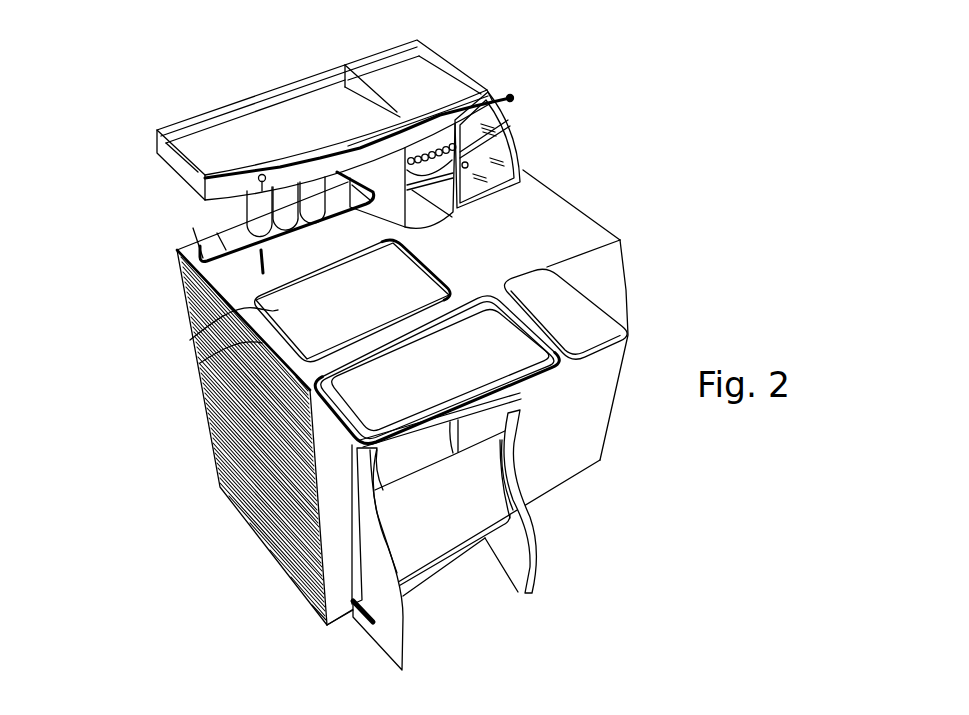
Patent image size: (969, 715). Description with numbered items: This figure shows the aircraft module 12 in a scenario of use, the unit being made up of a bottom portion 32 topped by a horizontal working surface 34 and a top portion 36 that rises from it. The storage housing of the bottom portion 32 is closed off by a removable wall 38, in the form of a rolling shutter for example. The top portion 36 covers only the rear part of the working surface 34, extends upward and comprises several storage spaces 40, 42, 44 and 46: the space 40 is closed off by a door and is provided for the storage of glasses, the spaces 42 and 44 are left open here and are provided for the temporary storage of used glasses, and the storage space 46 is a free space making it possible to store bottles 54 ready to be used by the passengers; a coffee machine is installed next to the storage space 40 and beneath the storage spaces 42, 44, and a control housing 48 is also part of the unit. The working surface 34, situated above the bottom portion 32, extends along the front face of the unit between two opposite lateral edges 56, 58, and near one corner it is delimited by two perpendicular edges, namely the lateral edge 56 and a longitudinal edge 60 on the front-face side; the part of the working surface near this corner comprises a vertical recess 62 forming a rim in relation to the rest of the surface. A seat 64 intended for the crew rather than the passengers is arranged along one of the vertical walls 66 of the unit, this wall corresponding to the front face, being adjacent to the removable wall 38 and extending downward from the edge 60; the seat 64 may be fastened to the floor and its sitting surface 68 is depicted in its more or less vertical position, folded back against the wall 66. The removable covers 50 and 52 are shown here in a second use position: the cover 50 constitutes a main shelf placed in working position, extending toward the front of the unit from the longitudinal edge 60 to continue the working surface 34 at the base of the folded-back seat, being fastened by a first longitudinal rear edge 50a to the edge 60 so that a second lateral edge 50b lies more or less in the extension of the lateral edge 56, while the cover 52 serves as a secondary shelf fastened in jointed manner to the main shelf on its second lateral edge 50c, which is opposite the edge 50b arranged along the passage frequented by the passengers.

The module 12 is at (127, 388).
The bottom portion 32 is at (612, 448).
The working surface 34 is at (573, 223).
The top portion 36 is at (490, 72).
The removable wall 38 is at (230, 425).
The storage space 40 is at (521, 170).
The storage space 42 is at (280, 133).
The storage space 44 is at (417, 90).
The storage space 46 is at (226, 228).
The control housing 48 is at (430, 213).
The cover 50 is at (463, 384).
The first longitudinal rear edge 50a is at (415, 322).
The second lateral edge 50b is at (320, 408).
The second lateral edge 50c is at (533, 310).
The cover 52 is at (603, 344).
The bottles 54 is at (233, 213).
The lateral edge 56 is at (200, 363).
The lateral edge 58 is at (557, 190).
The longitudinal edge 60 is at (627, 262).
The vertical recess 62 is at (190, 340).
The seat 64 is at (463, 567).
The vertical wall 66 is at (338, 623).
The sitting surface 68 is at (500, 500).